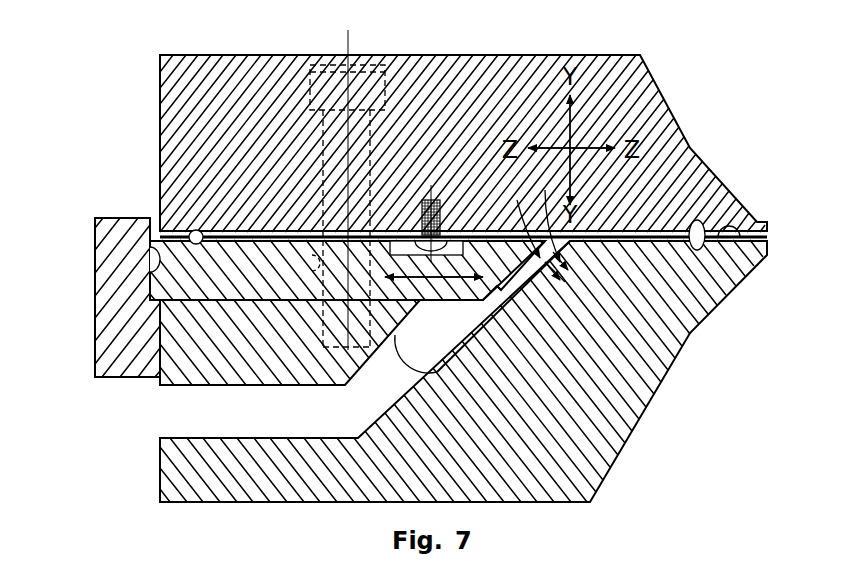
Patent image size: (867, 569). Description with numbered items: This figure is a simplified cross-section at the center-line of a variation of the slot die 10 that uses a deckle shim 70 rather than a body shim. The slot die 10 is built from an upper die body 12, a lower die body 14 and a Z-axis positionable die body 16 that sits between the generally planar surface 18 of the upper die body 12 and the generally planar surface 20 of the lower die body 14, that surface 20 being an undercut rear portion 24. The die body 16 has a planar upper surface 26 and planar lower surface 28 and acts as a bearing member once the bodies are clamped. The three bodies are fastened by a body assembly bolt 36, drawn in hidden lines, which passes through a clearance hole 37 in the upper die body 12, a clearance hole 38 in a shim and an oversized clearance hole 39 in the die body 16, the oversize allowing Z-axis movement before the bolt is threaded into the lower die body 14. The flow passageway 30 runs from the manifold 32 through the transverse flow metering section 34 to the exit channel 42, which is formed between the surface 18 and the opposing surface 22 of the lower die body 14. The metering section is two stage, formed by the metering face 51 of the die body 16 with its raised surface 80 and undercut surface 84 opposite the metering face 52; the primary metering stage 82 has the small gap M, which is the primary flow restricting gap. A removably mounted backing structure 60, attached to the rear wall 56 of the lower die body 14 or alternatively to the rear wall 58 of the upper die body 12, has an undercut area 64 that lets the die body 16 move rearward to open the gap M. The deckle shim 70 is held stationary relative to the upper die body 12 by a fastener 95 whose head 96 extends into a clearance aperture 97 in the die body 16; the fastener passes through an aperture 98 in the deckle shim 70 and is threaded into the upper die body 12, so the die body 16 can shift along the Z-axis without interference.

The slot die 10 is at (150, 102).
The upper die body 12 is at (668, 95).
The lower die body 14 is at (656, 402).
The die body 16 is at (191, 282).
The generally planar surface 18 is at (702, 222).
The generally planar surface 20 is at (250, 297).
The opposing surface 22 is at (750, 244).
The undercut rear portion 24 is at (180, 362).
The upper surface 26 is at (203, 230).
The lower surface 28 is at (290, 300).
The flow passageway 30 is at (233, 421).
The manifold 32 is at (437, 355).
The transverse flow metering section 34 is at (537, 295).
The body assembly bolt 36 is at (310, 90).
The body bolt clearance hole 37 is at (318, 142).
The body bolt clearance hole 38 is at (322, 225).
The body bolt clearance hole 39 is at (308, 264).
The exit channel 42 is at (657, 231).
The metering face 51 is at (472, 238).
The metering face 52 is at (560, 278).
The rear wall 56 is at (158, 355).
The rear wall 58 is at (160, 140).
The backing structure 60 is at (90, 325).
The undercut area 64 is at (160, 258).
The deckle shim 70 is at (242, 231).
The raised surface 80 is at (520, 216).
The primary metering stage 82 is at (545, 213).
The undercut surface 84 is at (507, 300).
The fastener 95 is at (433, 199).
The fastener head 96 is at (428, 245).
The clearance aperture 97 is at (455, 237).
The aperture 98 is at (415, 232).
The transverse flow metering gap M is at (573, 277).